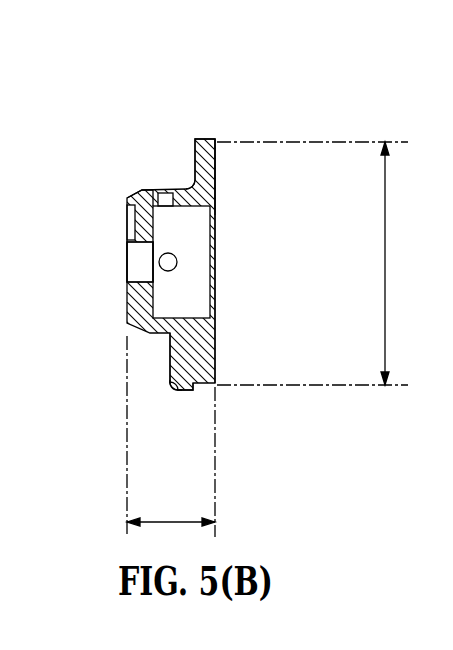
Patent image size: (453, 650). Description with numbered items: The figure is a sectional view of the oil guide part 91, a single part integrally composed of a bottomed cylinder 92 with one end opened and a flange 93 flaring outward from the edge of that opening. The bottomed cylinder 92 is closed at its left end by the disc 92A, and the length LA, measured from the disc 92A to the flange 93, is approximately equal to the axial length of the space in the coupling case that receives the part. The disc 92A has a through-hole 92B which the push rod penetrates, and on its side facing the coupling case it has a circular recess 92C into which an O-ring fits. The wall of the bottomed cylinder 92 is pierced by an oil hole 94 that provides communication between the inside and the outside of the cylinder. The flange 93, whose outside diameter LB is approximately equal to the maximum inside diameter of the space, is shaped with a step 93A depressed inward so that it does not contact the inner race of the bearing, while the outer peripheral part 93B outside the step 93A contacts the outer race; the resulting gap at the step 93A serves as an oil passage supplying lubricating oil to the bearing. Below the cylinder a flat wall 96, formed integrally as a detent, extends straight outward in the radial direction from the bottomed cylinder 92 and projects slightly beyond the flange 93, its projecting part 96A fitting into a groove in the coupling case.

The oil guide part 91 is at (297, 88).
The bottomed cylinder 92 is at (178, 187).
The disc 92A is at (138, 196).
The through-hole 92B is at (130, 258).
The circular recess 92C is at (127, 213).
The flange 93 is at (195, 154).
The step 93A is at (217, 189).
The outer peripheral part 93B is at (217, 157).
The oil hole 94 is at (177, 266).
The flat wall 96 is at (168, 364).
The projecting part 96A is at (183, 391).